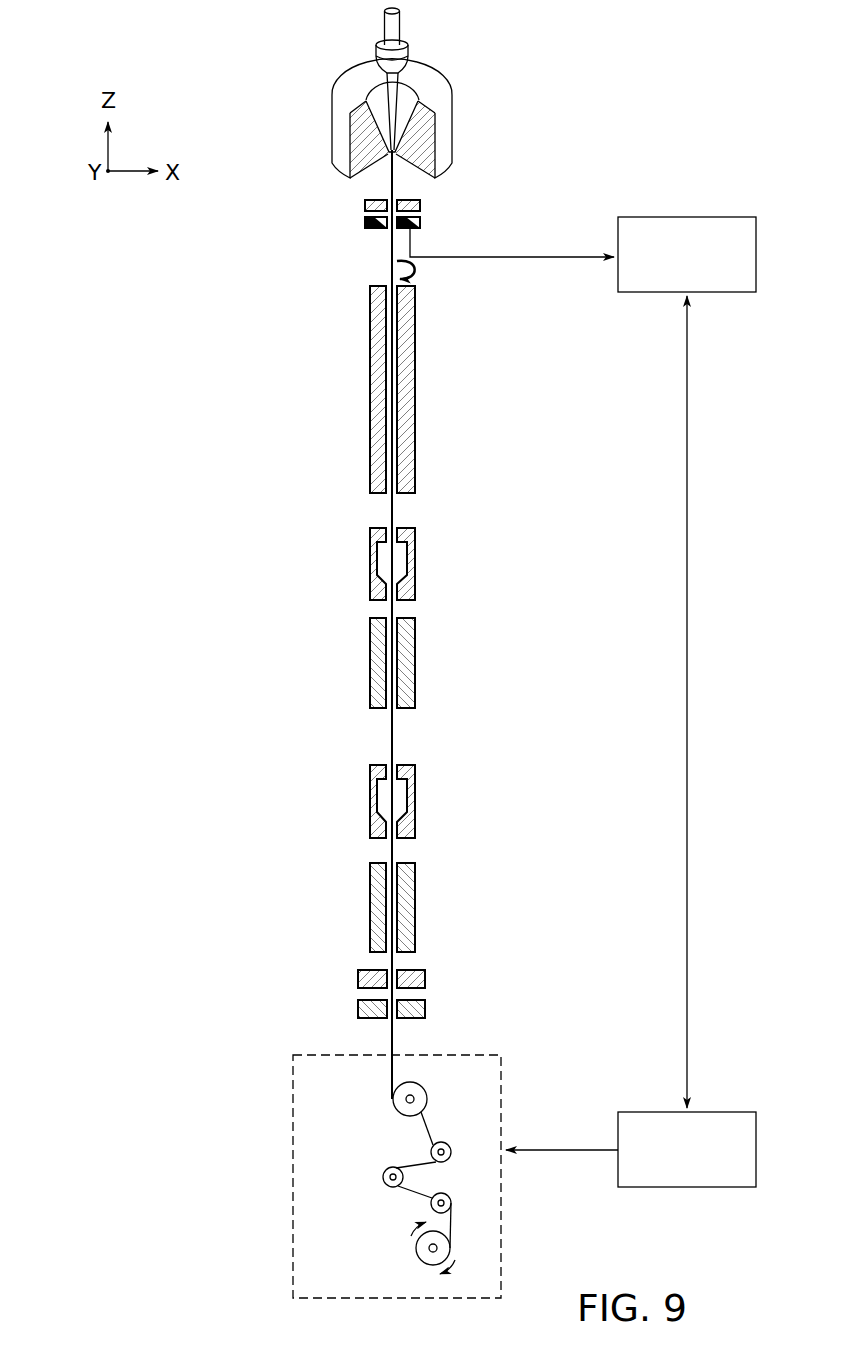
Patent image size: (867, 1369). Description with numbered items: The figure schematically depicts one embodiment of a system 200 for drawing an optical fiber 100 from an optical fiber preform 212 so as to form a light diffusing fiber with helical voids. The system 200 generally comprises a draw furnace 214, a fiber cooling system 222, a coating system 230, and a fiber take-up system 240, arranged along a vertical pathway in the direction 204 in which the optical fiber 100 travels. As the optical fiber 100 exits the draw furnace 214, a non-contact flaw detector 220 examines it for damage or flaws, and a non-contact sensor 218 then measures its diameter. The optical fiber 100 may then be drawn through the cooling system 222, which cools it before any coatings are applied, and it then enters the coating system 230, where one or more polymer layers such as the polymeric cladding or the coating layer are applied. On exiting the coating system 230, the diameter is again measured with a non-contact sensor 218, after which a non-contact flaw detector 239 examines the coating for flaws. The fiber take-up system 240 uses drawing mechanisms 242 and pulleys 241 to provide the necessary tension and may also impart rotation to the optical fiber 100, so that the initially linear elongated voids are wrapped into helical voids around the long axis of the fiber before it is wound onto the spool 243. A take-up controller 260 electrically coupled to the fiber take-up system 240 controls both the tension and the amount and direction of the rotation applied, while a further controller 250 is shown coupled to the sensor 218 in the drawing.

The optical fiber 100 is at (380, 170).
The system 200 is at (604, 116).
The fiber direction indicator 204 is at (424, 268).
The preform 212 is at (424, 37).
The draw furnace 214 is at (466, 107).
The non-contact sensor 218 is at (420, 223).
The non-contact flaw detector 220 is at (420, 204).
The fiber cooling system 222 is at (442, 372).
The coating system 230 is at (338, 512).
The non-contact flaw detector 239 is at (425, 1009).
The fiber take-up system 240 is at (502, 1070).
The pulleys 241 is at (431, 1152).
The drawing mechanisms 242 is at (393, 1099).
The spool 243 is at (416, 1250).
The controller 250 is at (734, 217).
The take-up controller 260 is at (734, 1112).